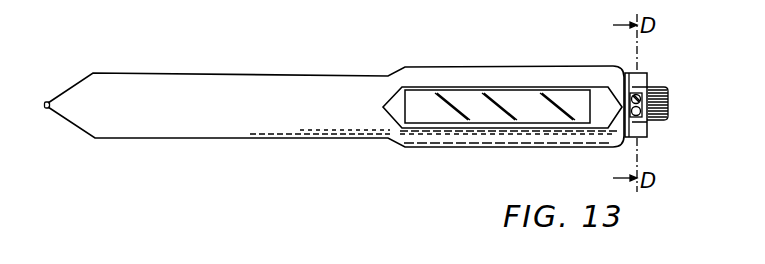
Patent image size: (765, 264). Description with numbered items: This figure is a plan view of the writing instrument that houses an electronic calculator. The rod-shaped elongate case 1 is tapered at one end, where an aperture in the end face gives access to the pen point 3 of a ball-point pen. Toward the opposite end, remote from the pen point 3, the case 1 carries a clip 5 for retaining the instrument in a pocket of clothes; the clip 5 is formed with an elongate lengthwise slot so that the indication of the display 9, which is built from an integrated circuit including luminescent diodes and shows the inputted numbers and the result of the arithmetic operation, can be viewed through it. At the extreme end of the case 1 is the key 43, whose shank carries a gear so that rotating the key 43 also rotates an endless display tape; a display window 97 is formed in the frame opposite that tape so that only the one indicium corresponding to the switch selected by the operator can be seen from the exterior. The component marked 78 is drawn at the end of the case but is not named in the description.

The case 1 is at (251, 75).
The pen point 3 is at (48, 102).
The clip 5 is at (465, 87).
The display 9 is at (531, 103).
The end cap 78 is at (619, 68).
The display window 97 is at (646, 84).
The key 43 is at (668, 95).